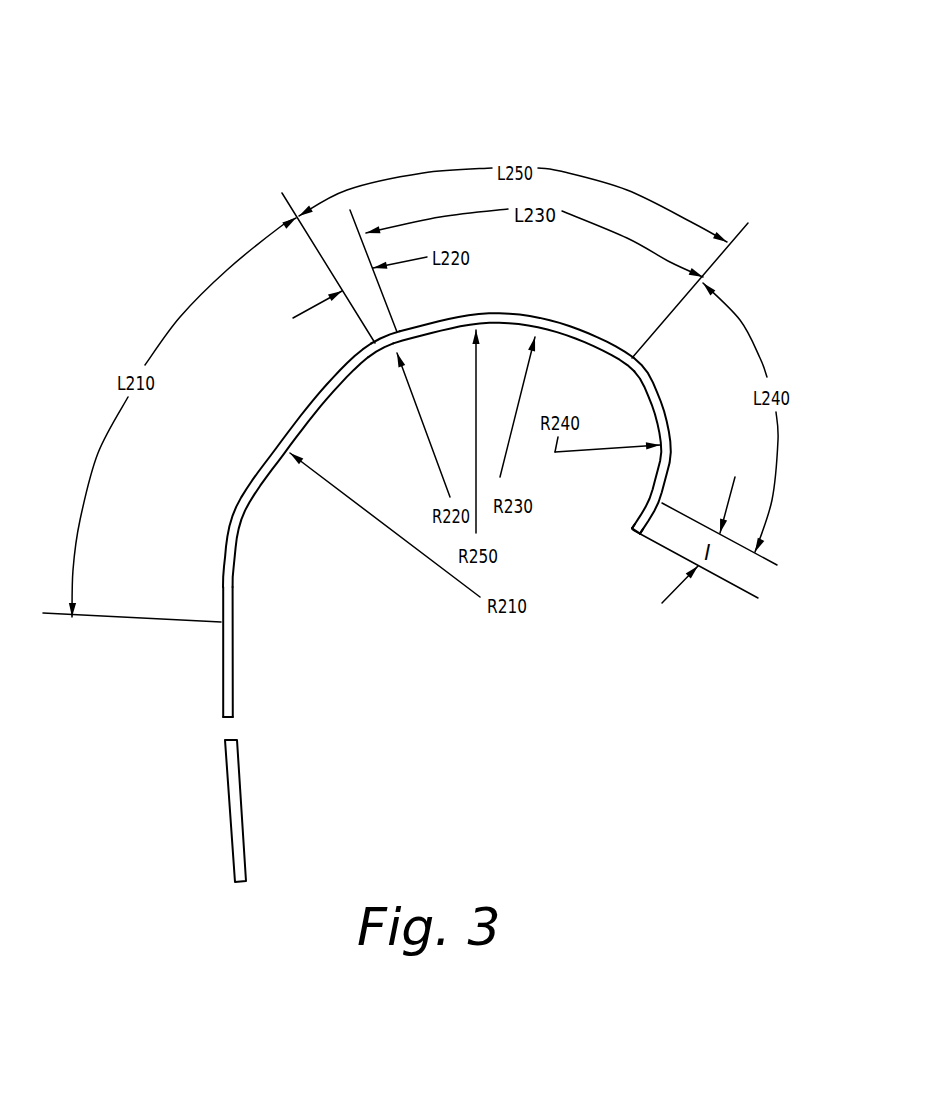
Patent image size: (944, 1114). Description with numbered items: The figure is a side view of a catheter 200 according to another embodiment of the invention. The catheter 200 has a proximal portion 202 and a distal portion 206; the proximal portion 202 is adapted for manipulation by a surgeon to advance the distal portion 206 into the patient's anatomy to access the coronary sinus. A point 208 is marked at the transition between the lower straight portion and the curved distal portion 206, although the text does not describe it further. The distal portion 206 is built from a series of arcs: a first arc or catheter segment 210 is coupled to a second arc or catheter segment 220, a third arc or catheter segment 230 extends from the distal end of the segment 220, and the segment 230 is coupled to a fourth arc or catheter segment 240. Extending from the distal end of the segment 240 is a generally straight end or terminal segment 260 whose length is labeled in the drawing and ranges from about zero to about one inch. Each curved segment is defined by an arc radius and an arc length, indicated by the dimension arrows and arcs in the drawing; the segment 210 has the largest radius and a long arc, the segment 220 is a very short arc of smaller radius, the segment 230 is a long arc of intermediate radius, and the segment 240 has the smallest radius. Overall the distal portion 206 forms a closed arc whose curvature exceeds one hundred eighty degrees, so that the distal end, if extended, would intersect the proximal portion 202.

The catheter 200 is at (150, 108).
The proximal portion 202 is at (238, 787).
The distal portion 206 is at (223, 662).
The transition point 208 is at (221, 620).
The first arc or catheter segment 210 is at (270, 458).
The second arc or catheter segment 220 is at (393, 348).
The third arc or catheter segment 230 is at (526, 314).
The fourth arc or catheter segment 240 is at (673, 435).
The terminal segment 260 is at (650, 517).